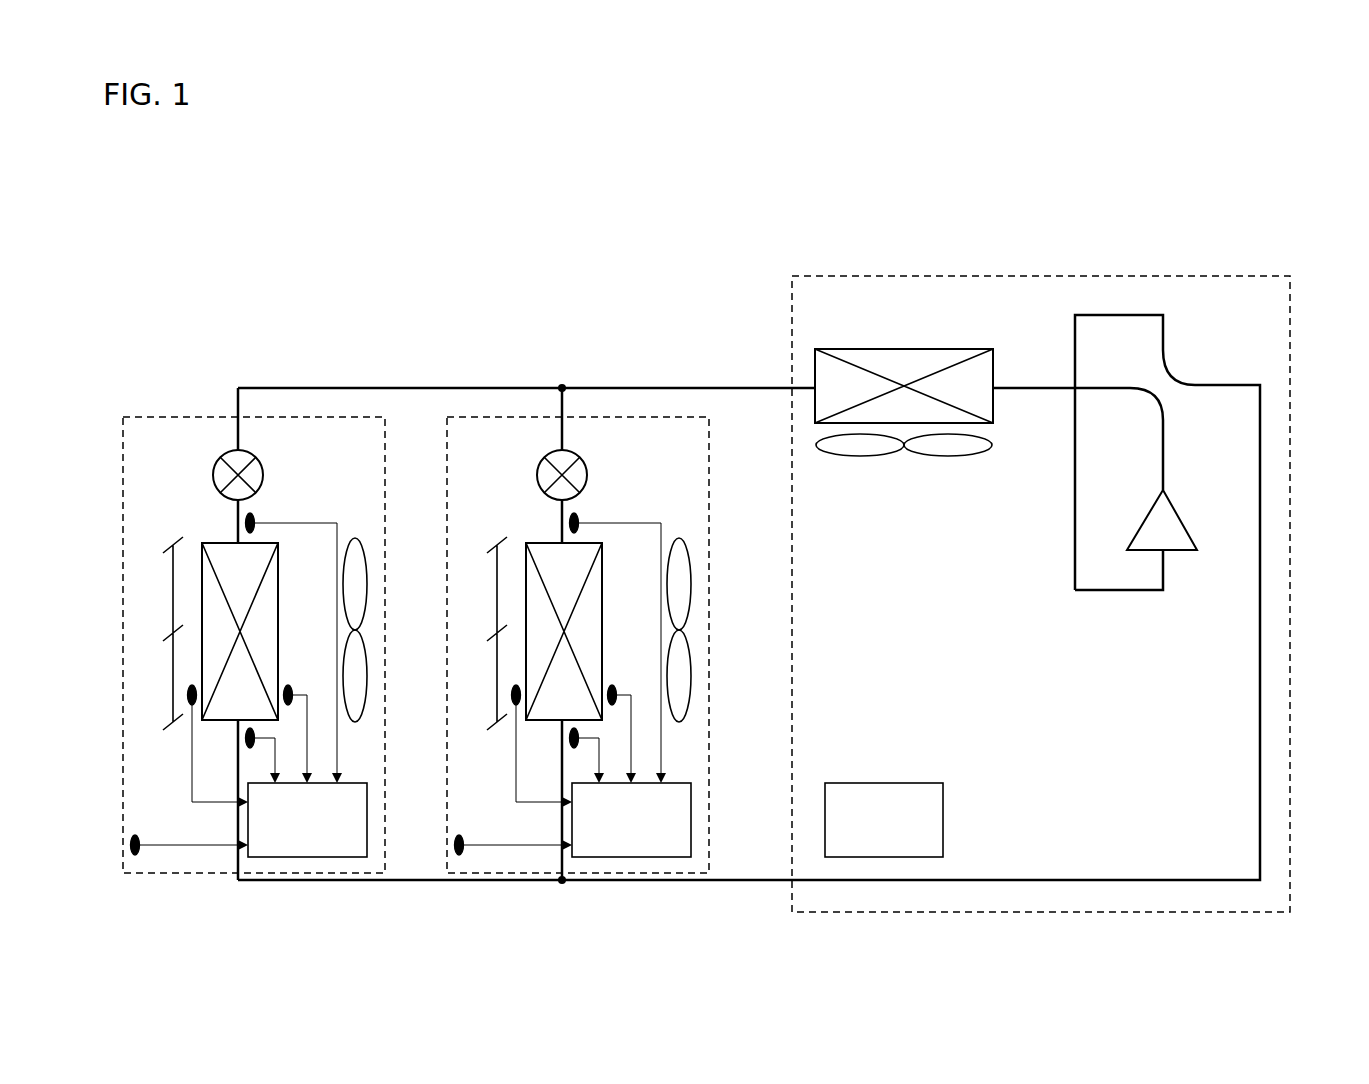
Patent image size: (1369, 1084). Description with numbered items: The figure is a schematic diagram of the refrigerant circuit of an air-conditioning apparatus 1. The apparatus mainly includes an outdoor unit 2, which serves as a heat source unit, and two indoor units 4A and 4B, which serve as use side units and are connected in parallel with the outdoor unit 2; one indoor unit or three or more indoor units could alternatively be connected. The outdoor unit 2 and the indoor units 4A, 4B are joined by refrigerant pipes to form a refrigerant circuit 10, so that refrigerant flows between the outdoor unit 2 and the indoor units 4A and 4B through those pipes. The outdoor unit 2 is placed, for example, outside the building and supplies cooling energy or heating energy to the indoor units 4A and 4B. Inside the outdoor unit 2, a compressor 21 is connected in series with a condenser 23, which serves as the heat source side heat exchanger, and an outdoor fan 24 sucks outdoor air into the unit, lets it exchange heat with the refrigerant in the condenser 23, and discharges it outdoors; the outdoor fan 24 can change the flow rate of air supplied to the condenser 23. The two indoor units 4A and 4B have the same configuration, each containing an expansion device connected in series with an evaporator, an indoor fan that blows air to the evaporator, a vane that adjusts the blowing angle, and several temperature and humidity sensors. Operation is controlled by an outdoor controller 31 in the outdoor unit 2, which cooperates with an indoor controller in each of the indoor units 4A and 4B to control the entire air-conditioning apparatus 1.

The air-conditioning apparatus 1 is at (490, 268).
The outdoor unit 2 is at (1030, 275).
The indoor unit 4A is at (180, 415).
The indoor unit 4B is at (505, 414).
The refrigerant circuit 10 is at (707, 388).
The compressor 21 is at (1185, 515).
The condenser 23 is at (905, 349).
The outdoor fan 24 is at (905, 456).
The outdoor controller 31 is at (943, 822).